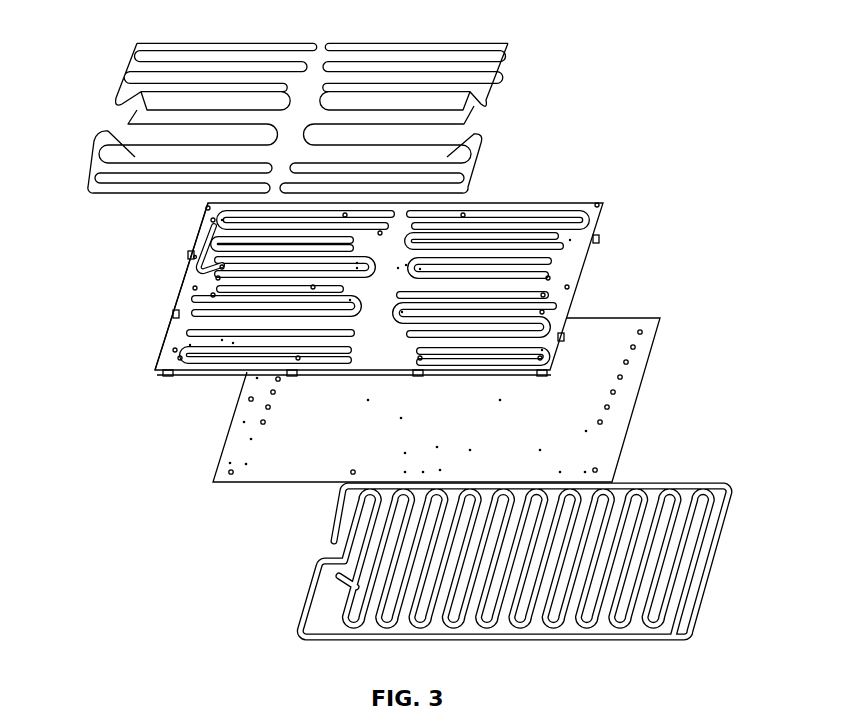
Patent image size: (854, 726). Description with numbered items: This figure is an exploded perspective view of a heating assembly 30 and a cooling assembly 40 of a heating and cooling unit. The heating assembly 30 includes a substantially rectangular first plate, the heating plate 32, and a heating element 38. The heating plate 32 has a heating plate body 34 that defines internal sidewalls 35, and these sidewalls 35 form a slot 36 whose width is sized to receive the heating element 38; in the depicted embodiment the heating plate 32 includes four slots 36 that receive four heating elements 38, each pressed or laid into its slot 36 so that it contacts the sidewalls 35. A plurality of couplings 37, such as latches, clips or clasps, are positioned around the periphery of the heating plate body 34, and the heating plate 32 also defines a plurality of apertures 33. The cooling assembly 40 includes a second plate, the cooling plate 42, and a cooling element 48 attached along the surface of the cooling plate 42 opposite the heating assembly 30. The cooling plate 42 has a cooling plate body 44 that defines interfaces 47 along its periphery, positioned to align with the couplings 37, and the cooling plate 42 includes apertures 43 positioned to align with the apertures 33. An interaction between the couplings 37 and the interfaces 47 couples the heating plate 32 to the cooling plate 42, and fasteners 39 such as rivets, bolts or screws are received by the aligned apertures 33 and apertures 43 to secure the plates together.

The heating assembly 30 is at (638, 68).
The heating plate 32 is at (399, 319).
The apertures 33 is at (347, 312).
The heating plate body 34 is at (194, 291).
The sidewalls 35 is at (402, 259).
The slot 36 is at (193, 249).
The couplings 37 is at (605, 239).
The heating element 38 is at (519, 35).
The fasteners 39 is at (349, 300).
The cooling assembly 40 is at (208, 572).
The cooling plate 42 is at (434, 432).
The apertures 43 is at (402, 418).
The cooling plate body 44 is at (586, 431).
The interfaces 47 is at (656, 350).
The cooling element 48 is at (298, 614).